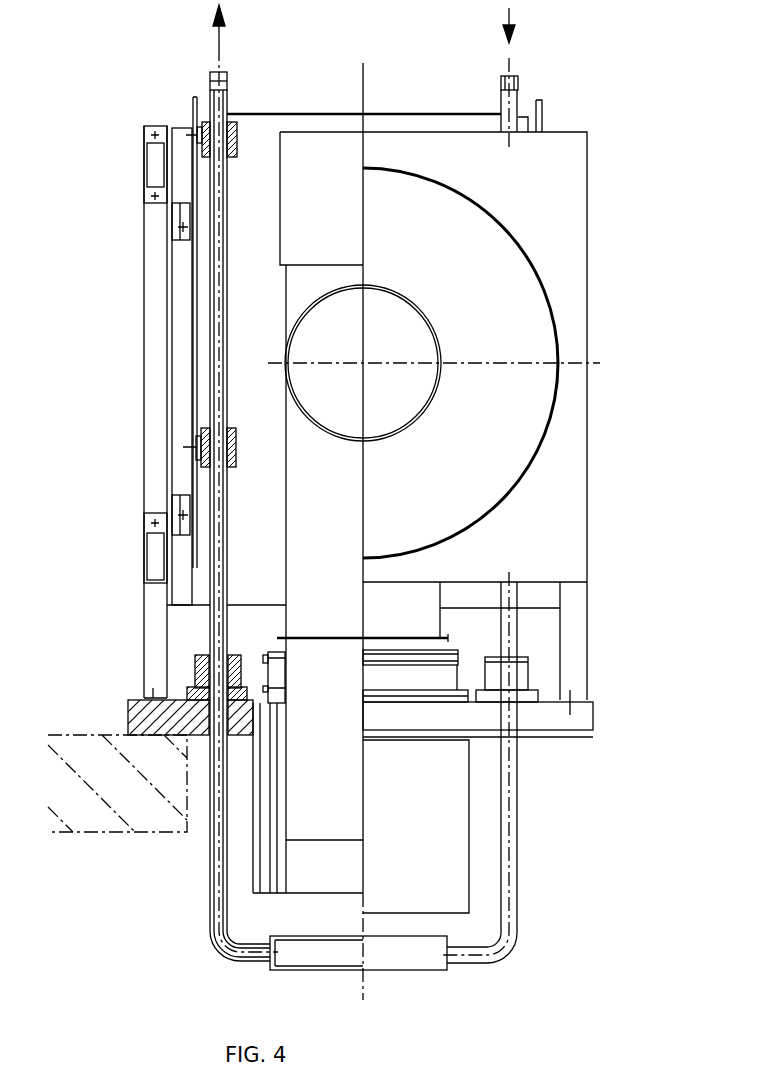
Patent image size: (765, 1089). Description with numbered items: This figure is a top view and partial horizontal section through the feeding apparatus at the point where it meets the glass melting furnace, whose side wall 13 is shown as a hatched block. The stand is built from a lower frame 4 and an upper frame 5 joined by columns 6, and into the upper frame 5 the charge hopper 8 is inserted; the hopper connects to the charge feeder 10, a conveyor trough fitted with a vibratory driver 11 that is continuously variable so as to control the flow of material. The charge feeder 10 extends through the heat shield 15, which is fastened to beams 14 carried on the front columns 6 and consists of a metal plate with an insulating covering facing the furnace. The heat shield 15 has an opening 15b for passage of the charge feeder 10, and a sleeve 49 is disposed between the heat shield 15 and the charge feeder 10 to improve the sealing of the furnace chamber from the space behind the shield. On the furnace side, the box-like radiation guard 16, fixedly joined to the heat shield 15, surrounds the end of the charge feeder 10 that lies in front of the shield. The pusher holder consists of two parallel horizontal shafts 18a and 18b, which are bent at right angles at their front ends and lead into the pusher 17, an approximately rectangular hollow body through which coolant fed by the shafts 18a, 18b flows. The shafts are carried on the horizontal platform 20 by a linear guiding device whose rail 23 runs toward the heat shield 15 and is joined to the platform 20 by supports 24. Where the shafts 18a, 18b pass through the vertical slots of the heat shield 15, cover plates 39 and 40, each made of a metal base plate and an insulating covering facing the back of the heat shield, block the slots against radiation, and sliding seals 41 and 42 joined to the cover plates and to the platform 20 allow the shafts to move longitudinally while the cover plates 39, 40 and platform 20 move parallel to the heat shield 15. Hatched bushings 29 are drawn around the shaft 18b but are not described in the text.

The lower frame 4 is at (157, 417).
The upper frame 5 is at (567, 212).
The columns 6 is at (153, 165).
The charge hopper 8 is at (568, 305).
The charge feeder 10 is at (310, 534).
The vibratory driver 11 is at (333, 145).
The side wall 13 is at (75, 825).
The beams 14 is at (153, 632).
The heat shield 15 is at (575, 718).
The opening of heat shield (back of heat shield) 15b is at (464, 688).
The radiation guard 16 is at (443, 863).
The pusher 17 is at (400, 953).
The shaft 18a is at (504, 107).
The shaft 18b is at (231, 101).
The platform 20 is at (398, 122).
The rail 23 is at (193, 357).
The supports 24 is at (190, 228).
The bushings 29 is at (243, 138).
The cover plate 39 is at (538, 695).
The cover plate 40 is at (178, 692).
The sliding seal 41 is at (518, 678).
The sliding seal 42 is at (200, 672).
The sleeve 49 is at (258, 672).